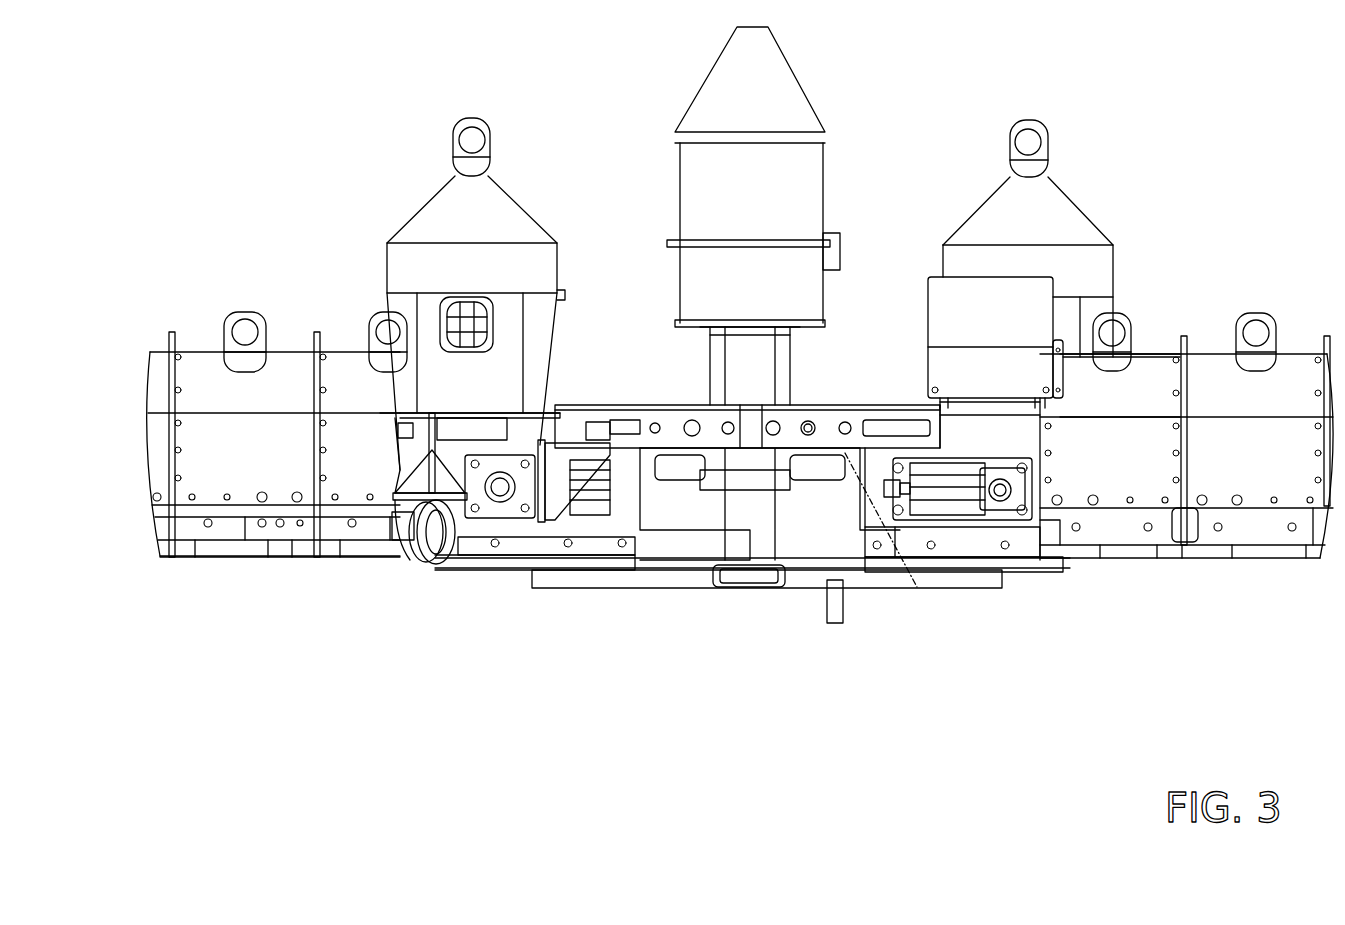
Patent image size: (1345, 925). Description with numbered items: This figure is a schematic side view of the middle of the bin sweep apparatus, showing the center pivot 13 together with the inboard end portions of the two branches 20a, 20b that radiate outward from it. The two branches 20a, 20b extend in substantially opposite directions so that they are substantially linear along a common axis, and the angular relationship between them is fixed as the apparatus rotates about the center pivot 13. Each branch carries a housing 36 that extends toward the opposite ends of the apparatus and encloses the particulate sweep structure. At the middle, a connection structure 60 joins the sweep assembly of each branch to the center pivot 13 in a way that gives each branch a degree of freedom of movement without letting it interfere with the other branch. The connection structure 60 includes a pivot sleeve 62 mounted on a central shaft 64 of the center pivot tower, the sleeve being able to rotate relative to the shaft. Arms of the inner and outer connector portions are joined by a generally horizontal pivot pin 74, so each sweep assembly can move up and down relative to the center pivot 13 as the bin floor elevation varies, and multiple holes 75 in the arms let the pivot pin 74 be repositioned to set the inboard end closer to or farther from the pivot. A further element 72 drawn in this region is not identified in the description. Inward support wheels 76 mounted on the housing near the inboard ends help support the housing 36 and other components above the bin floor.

The center pivot 13 is at (853, 183).
The branch 20a is at (248, 480).
The branch 20b is at (1250, 480).
The housing 36 is at (1143, 385).
The connection structure 60 is at (658, 610).
The pivot sleeve 62 is at (747, 353).
The central shaft 64 is at (760, 523).
The transverse beam 72 is at (825, 425).
The pivot pin 74 is at (692, 436).
The holes 75 is at (655, 423).
The inward support wheel 76 is at (425, 565).